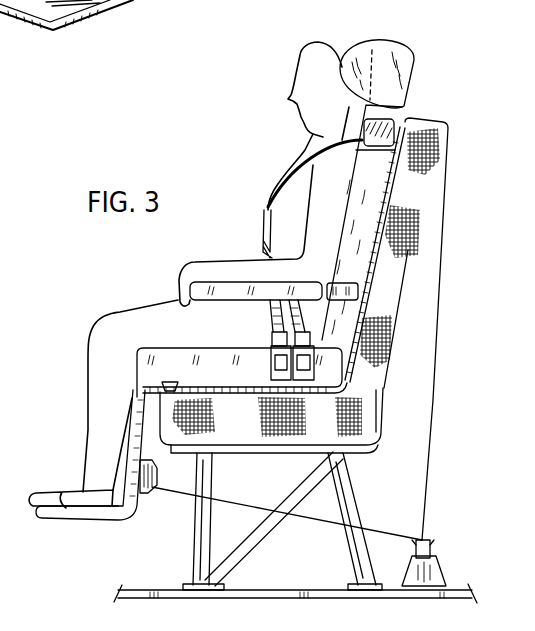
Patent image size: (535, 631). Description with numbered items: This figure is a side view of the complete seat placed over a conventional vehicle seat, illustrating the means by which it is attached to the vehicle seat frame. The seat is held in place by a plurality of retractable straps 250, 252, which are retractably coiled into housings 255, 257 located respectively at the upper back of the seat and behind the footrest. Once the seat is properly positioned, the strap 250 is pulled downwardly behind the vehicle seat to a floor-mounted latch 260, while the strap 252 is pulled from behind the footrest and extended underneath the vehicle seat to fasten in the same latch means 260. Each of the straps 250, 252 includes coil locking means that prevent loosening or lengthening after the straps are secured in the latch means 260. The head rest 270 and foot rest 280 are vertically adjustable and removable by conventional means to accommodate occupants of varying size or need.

The retractable strap 250 is at (440, 284).
The retractable strap 252 is at (222, 494).
The housing 255 is at (393, 119).
The housing 257 is at (136, 494).
The floor-mounted latch 260 is at (430, 563).
The head rest 270 is at (388, 48).
The foot rest 280 is at (84, 514).